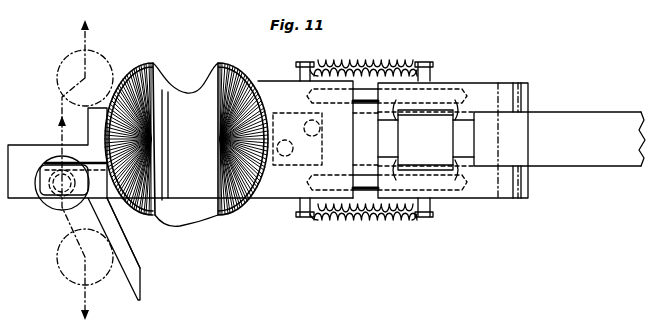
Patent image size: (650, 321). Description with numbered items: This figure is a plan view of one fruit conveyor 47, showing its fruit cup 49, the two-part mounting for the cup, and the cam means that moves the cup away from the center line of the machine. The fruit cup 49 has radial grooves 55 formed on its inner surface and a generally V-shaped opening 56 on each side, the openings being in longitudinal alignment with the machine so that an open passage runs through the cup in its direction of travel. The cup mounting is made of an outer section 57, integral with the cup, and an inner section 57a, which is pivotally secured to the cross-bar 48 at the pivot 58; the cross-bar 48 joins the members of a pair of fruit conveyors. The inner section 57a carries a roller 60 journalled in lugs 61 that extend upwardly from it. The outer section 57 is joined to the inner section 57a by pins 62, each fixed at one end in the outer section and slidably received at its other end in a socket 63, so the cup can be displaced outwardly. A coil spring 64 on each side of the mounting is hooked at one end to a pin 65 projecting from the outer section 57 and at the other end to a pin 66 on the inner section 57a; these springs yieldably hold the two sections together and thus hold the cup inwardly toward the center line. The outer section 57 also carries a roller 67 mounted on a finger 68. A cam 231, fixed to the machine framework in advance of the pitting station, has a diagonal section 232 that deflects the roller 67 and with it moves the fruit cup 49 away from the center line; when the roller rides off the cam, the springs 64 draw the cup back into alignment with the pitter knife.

The fruit conveyor 47 is at (204, 61).
The cross-bar 48 is at (577, 118).
The fruit cup 49 is at (238, 80).
The radial grooves 55 is at (143, 74).
The V-shaped opening 56 is at (170, 84).
The outer section 57 is at (272, 195).
The inner section 57a is at (484, 192).
The pivot 58 is at (500, 90).
The roller 60 is at (452, 107).
The lugs 61 is at (384, 141).
The pins 62 is at (358, 92).
The socket 63 is at (436, 92).
The coil spring 64 is at (392, 65).
The pin 65 is at (300, 66).
The pin 66 is at (421, 73).
The roller 67 is at (67, 62).
The finger 68 is at (42, 176).
The cam 231 is at (138, 278).
The diagonal section 232 is at (125, 272).